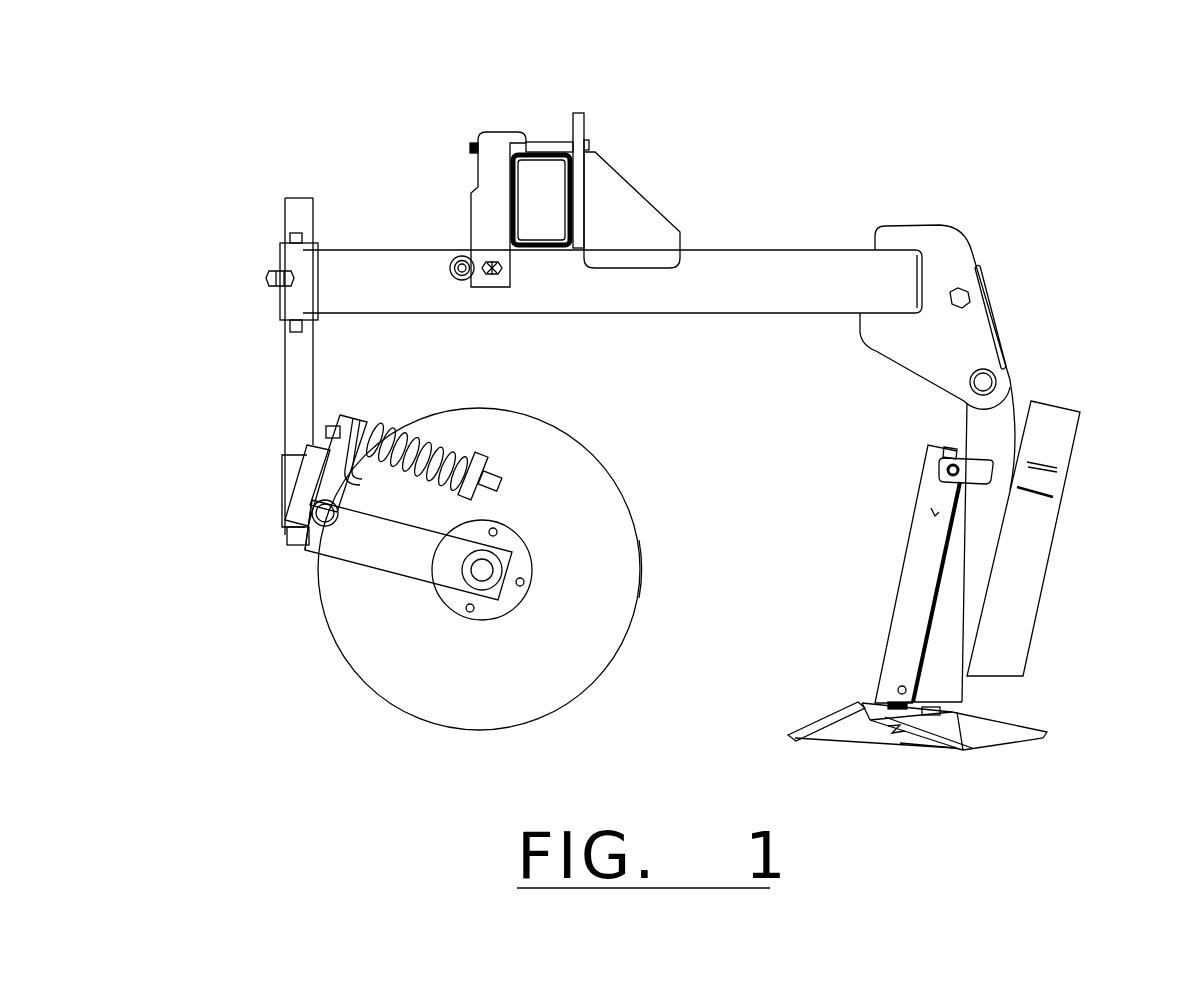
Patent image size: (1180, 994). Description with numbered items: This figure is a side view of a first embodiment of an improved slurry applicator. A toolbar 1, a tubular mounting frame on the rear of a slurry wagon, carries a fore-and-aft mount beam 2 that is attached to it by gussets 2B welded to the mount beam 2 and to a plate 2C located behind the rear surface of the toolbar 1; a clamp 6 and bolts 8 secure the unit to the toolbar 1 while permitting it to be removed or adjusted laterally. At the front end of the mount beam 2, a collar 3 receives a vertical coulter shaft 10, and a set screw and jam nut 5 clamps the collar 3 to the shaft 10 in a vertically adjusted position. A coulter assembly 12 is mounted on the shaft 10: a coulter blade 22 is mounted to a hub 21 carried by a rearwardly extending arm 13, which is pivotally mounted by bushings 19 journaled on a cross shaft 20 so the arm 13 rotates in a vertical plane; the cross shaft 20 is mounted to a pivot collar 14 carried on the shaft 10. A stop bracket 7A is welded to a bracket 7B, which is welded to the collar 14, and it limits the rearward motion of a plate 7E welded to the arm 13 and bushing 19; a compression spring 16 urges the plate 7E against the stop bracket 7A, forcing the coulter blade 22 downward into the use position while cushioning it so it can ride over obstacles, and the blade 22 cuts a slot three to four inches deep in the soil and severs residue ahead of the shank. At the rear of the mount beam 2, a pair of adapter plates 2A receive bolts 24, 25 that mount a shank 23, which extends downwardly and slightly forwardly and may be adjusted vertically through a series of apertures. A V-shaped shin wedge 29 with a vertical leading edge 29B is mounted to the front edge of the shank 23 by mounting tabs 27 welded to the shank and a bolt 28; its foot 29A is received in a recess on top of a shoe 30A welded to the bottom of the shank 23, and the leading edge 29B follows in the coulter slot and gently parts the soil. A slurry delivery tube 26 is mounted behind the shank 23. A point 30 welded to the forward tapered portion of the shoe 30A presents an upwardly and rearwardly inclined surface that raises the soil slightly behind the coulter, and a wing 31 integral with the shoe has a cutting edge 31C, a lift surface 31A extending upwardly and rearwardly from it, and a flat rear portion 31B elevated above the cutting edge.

The toolbar 1 is at (506, 148).
The mount beam 2 is at (385, 248).
The adapter plates 2A is at (961, 227).
The gussets 2B is at (639, 190).
The plate 2C is at (580, 110).
The collar 3 is at (279, 241).
The set screw and jam nut 5 is at (264, 277).
The clamp 6 is at (519, 129).
The bolts 8 is at (551, 140).
The coulter shaft 10 is at (283, 370).
The stop bracket 7A is at (361, 412).
The bracket 7B is at (296, 461).
The plate 7E is at (348, 411).
The coulter assembly 12 is at (601, 430).
The arm 13 is at (397, 580).
The pivot collar 14 is at (281, 497).
The compression spring 16 is at (426, 440).
The bushings 19 is at (314, 583).
The cross shaft 20 is at (298, 514).
The hub 21 is at (537, 550).
The coulter blade 22 is at (646, 565).
The shank 23 is at (1015, 399).
The bolt 24 is at (993, 368).
The bolt 25 is at (976, 283).
The slurry delivery tube 26 is at (1086, 425).
The mounting tabs 27 is at (965, 453).
The bolt 28 is at (941, 461).
The shin wedge 29 is at (930, 510).
The foot 29A is at (896, 696).
The leading edge 29B is at (896, 585).
The point 30 is at (831, 711).
The shoe 30A is at (926, 710).
The left wing 31 is at (998, 750).
The lift surface 31A is at (893, 735).
The flat rear portion 31B is at (997, 736).
The cutting edge 31C is at (930, 750).